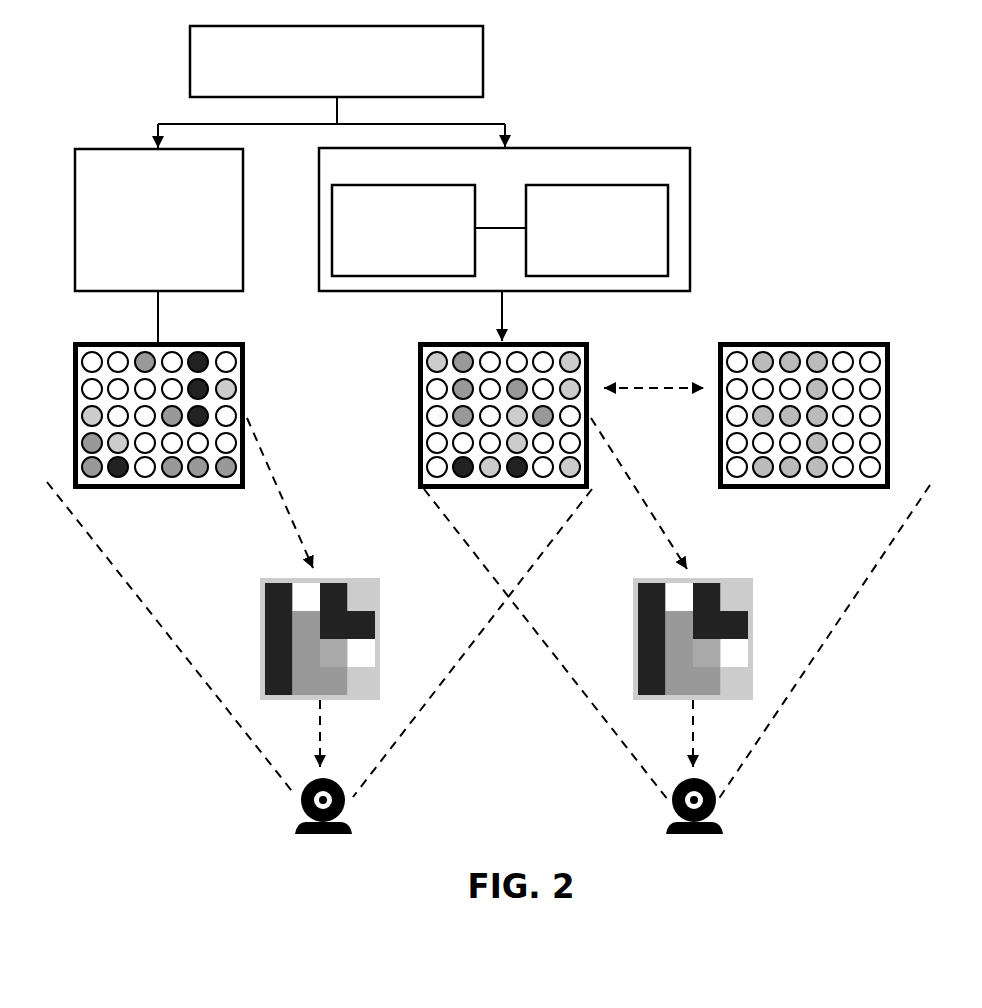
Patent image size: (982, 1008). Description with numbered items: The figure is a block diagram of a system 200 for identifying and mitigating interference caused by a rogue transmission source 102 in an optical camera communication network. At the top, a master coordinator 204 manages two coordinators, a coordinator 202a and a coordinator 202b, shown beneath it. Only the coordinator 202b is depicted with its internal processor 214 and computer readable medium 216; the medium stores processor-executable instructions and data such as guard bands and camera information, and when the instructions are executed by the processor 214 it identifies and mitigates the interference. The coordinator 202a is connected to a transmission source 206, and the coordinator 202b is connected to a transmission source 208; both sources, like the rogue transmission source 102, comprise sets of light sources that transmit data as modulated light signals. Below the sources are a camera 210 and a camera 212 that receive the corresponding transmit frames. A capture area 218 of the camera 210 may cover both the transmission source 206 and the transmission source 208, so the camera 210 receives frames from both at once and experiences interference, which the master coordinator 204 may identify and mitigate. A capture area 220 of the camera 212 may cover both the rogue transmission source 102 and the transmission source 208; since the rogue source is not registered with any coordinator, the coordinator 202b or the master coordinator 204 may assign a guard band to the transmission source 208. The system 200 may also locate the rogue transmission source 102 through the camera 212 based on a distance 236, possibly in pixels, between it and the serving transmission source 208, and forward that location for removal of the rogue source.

The system 200 is at (800, 140).
The master coordinator 204 is at (336, 61).
The coordinator 202a is at (159, 220).
The coordinator 202b is at (504, 219).
The computer readable medium 216 is at (403, 230).
The processor 214 is at (597, 230).
The transmission source 206 is at (246, 366).
The transmission source 208 is at (591, 366).
The rogue transmission source 102 is at (892, 369).
The distance 236 is at (646, 392).
The capture area 218 is at (186, 662).
The capture area 220 is at (542, 640).
The camera 210 is at (352, 825).
The camera 212 is at (722, 825).